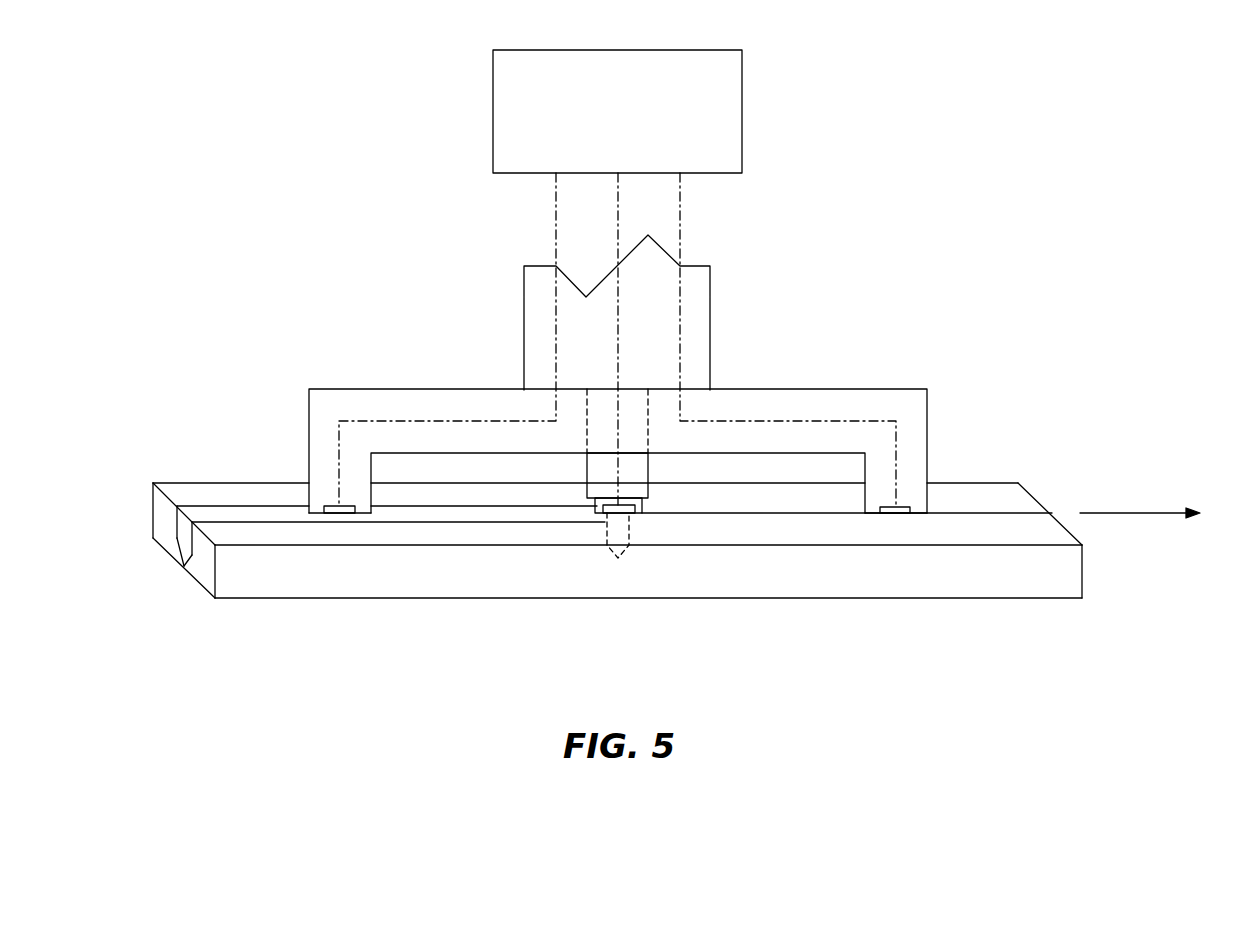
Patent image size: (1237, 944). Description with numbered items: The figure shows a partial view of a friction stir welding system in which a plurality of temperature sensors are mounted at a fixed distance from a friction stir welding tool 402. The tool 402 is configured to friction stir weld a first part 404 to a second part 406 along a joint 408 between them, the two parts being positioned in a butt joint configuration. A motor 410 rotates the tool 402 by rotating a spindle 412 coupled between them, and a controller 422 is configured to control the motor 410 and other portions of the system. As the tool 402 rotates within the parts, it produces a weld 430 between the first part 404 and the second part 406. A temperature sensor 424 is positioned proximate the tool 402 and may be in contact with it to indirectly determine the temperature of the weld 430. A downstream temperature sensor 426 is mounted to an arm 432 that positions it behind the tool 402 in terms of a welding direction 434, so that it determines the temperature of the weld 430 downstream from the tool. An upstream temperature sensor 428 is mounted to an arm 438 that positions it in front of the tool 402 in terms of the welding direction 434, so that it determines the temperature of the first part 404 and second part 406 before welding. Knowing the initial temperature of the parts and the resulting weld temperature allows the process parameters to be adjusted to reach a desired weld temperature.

The friction stir welding tool 402 is at (673, 557).
The first part 404 is at (647, 500).
The second part 406 is at (669, 540).
The joint 408 is at (847, 573).
The motor 410 is at (567, 312).
The spindle 412 is at (663, 443).
The controller 422 is at (677, 111).
The temperature sensor 424 is at (658, 518).
The downstream temperature sensor 426 is at (378, 550).
The upstream temperature sensor 428 is at (849, 485).
The weld 430 is at (391, 512).
The arm 432 is at (463, 426).
The welding direction 434 is at (1158, 491).
The arm 438 is at (772, 427).